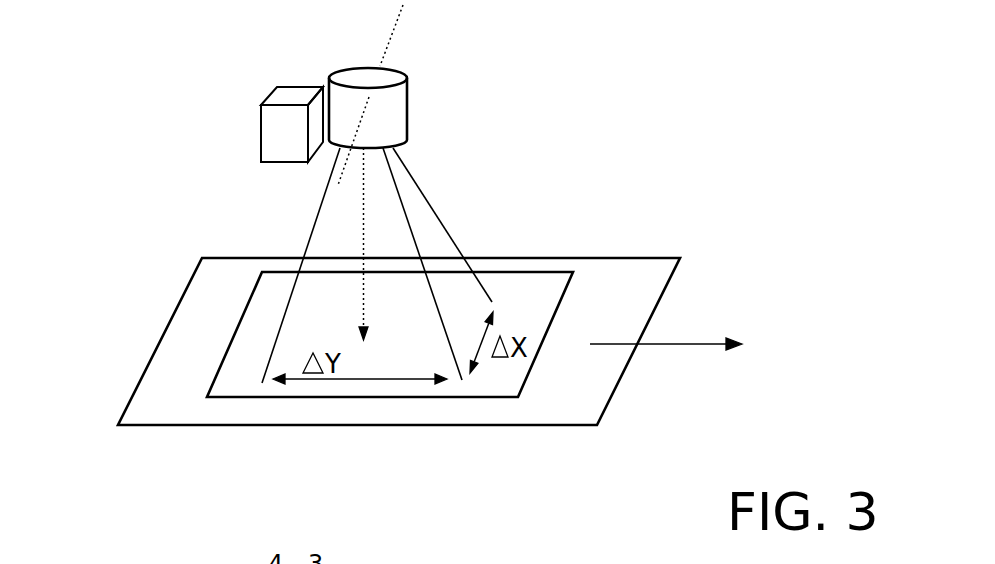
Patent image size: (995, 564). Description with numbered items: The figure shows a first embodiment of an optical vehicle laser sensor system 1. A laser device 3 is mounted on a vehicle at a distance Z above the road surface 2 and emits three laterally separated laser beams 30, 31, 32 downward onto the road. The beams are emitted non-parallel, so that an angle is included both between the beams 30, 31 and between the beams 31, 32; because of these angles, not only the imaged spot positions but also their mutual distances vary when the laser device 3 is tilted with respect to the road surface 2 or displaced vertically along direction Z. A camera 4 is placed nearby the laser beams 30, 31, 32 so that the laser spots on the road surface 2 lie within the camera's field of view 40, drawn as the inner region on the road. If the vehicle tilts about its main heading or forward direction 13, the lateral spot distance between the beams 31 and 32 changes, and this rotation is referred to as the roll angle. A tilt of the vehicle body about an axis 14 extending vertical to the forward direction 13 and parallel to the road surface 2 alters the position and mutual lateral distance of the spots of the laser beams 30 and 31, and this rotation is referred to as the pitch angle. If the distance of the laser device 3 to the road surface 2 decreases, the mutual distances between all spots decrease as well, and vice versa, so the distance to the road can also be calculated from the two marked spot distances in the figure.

The optical vehicle laser sensor system 1 is at (648, 92).
The road surface 2 is at (558, 408).
The laser device 3 is at (407, 107).
The camera 4 is at (261, 133).
The forward direction 13 is at (679, 347).
The axis 14 is at (390, 38).
The laser beam 30 is at (312, 228).
The laser beam 31 is at (400, 190).
The laser beam 32 is at (448, 228).
The field of view 40 is at (482, 398).